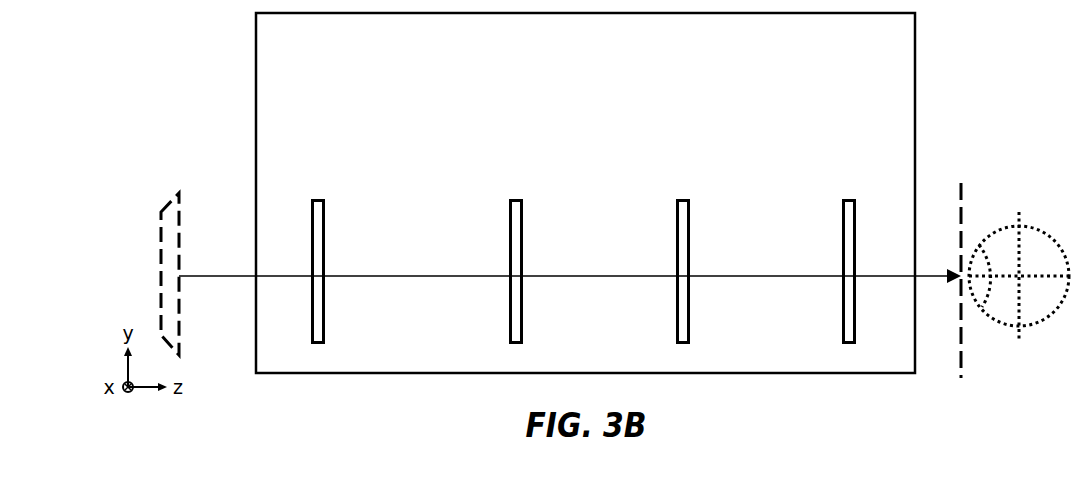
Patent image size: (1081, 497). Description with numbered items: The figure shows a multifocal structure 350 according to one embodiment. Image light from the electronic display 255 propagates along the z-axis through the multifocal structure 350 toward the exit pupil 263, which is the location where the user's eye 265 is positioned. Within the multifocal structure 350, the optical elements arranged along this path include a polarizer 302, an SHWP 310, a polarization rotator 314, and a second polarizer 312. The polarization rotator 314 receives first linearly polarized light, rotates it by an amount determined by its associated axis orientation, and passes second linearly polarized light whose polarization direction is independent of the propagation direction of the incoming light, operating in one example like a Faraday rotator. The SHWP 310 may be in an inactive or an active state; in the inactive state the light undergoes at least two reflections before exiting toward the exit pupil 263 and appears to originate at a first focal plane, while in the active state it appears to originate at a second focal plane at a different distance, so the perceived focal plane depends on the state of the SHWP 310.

The electronic display 255 is at (175, 237).
The multifocal structure 350 is at (585, 193).
The polarizer 302 is at (318, 231).
The SHWP 310 is at (515, 218).
The polarization rotator 314 is at (682, 218).
The polarizer 312 is at (848, 231).
The exit pupil 263 is at (961, 249).
The eye 265 is at (1006, 408).